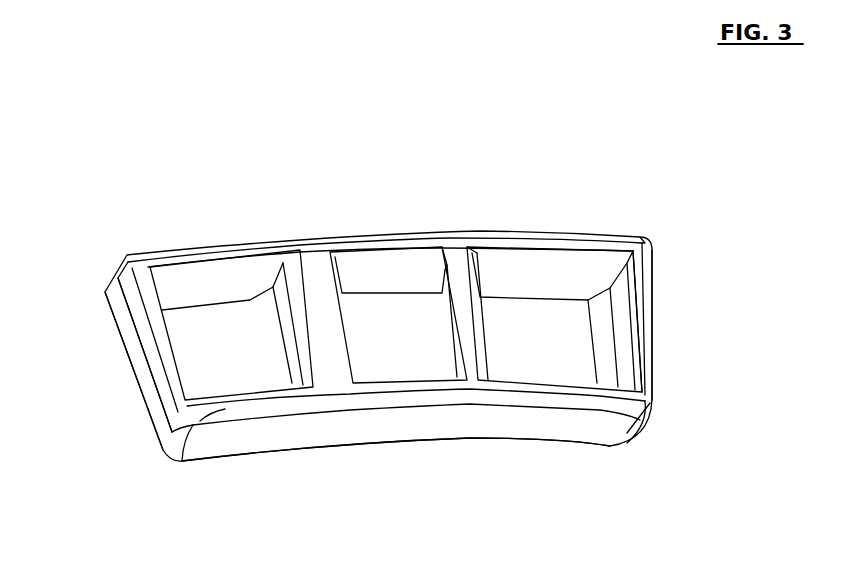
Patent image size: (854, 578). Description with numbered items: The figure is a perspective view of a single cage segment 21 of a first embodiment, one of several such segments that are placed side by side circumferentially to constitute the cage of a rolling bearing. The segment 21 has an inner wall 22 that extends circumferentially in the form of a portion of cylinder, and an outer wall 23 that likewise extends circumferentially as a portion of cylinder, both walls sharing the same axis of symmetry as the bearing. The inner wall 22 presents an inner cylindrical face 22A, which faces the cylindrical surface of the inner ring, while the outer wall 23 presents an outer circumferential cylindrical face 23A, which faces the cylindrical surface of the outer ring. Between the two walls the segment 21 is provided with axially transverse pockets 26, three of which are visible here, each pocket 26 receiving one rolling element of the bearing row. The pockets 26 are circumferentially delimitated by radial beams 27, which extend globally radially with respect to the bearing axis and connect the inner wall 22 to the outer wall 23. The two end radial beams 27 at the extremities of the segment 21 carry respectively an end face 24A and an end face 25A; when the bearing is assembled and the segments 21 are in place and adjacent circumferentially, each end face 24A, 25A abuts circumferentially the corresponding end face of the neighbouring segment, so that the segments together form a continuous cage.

The segment 21 is at (155, 142).
The inner wall 22 is at (193, 430).
The inner cylindrical face 22A is at (240, 437).
The outer wall 23 is at (528, 240).
The outer circumferential cylindrical face 23A is at (488, 232).
The end face 24A is at (135, 348).
The end face 25A is at (655, 308).
The pockets 26 is at (237, 318).
The radial beams 27 is at (122, 257).